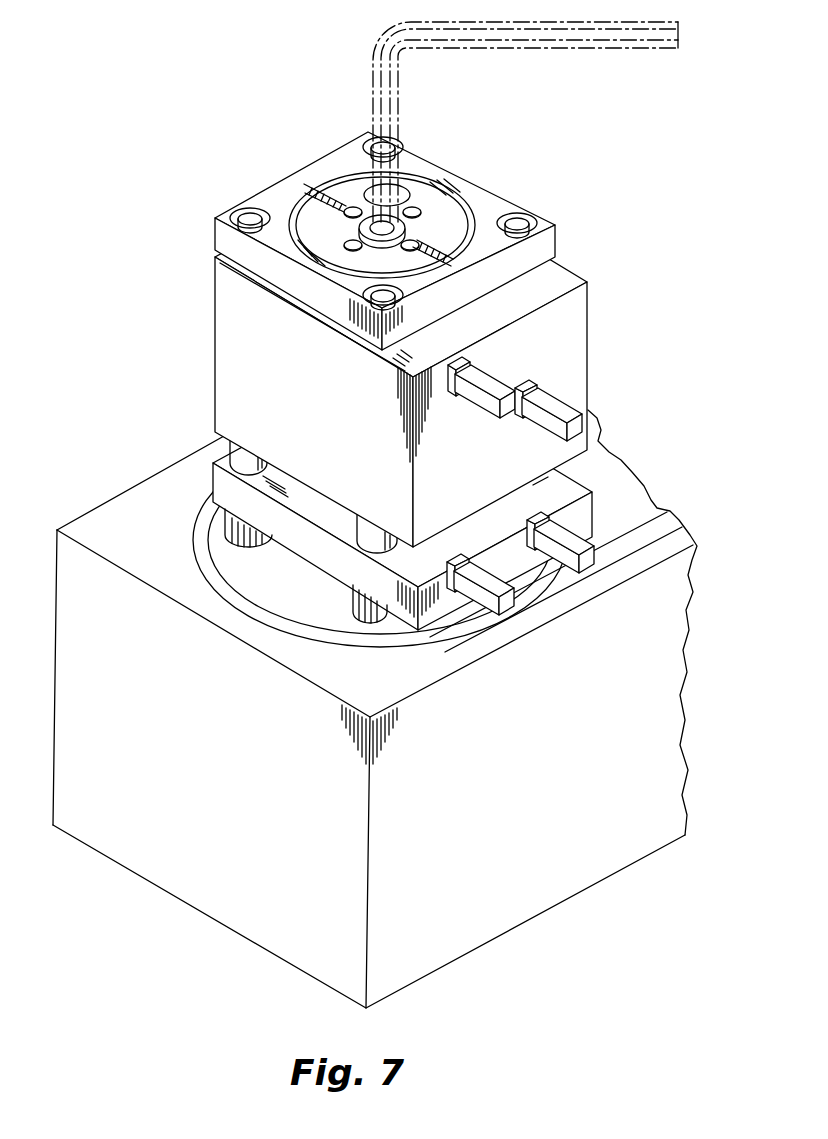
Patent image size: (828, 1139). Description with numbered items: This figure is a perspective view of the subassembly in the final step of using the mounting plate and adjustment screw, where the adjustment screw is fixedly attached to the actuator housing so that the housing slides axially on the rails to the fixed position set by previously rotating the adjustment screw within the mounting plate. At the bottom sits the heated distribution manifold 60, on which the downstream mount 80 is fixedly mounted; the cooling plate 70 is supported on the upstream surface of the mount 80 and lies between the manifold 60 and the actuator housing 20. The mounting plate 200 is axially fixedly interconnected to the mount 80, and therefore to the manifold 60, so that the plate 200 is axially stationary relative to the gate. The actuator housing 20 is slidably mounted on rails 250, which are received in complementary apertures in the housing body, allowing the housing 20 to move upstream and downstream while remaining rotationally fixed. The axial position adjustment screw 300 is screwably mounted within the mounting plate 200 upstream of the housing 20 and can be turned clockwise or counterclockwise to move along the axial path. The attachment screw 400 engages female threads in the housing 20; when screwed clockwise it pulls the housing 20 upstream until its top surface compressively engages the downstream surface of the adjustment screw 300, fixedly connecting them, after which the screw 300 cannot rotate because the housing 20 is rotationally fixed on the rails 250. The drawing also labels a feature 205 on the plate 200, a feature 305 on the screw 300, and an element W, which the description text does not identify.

The actuator housing 20 is at (213, 298).
The heated distribution manifold 60 is at (86, 515).
The cooling plate 70 is at (223, 483).
The downstream mount 80 is at (217, 517).
The mounting plate 200 is at (433, 162).
The groove 205 is at (327, 177).
The rails 250 is at (228, 442).
The axial position adjustment screw 300 is at (442, 200).
The annular ring 305 is at (302, 193).
The attachment screw 400 is at (410, 222).
The wire W is at (641, 51).